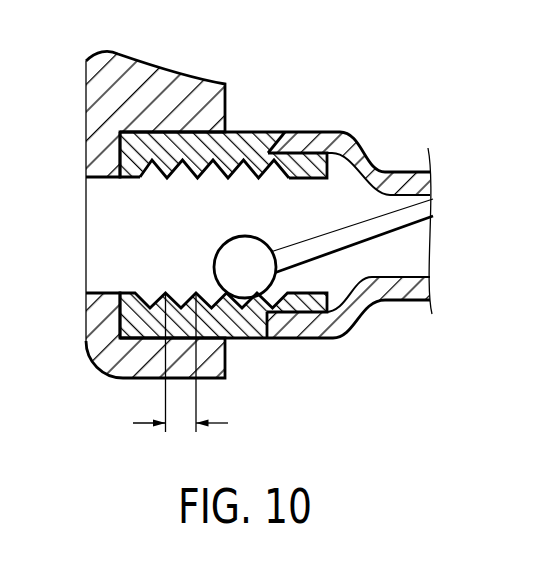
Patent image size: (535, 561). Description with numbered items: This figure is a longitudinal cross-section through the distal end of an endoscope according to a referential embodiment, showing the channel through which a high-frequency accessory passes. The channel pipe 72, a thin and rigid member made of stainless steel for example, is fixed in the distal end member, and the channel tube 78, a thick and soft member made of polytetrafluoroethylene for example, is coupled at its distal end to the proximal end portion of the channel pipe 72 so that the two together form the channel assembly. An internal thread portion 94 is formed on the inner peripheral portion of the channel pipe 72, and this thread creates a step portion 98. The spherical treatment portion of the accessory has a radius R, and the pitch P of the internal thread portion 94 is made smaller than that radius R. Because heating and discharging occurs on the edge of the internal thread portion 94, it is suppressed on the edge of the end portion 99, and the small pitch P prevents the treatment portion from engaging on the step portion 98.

The end portion 99 is at (120, 327).
The internal thread portion 94 is at (221, 160).
The step portion 98 is at (169, 170).
The channel pipe 72 is at (253, 332).
The channel tube 78 is at (348, 323).
The radius R is at (221, 247).
The pitch P is at (180, 362).